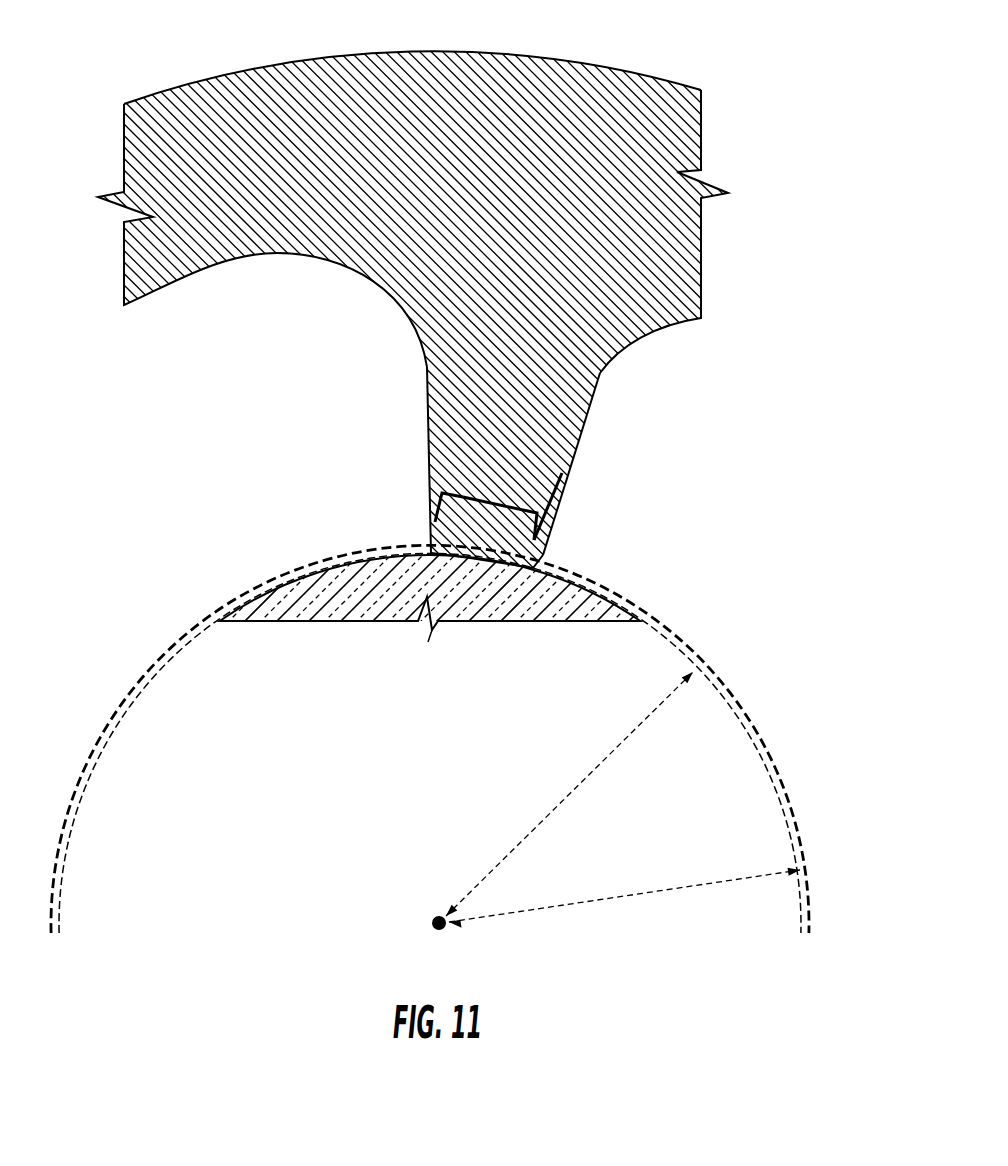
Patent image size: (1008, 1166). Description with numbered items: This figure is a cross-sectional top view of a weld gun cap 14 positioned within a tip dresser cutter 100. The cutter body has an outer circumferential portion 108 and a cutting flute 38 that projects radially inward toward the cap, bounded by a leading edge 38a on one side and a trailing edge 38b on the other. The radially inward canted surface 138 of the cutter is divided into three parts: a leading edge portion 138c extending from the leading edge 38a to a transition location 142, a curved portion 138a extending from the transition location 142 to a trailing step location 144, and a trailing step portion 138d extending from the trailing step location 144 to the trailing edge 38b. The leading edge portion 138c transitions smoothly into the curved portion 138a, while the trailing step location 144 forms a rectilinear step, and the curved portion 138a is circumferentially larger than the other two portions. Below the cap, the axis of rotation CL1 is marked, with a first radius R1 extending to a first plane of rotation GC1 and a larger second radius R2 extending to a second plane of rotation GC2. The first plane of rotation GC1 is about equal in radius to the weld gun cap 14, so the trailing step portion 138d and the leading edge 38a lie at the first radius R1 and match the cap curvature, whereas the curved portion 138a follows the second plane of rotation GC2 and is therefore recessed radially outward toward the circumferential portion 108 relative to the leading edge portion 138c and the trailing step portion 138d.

The tip dresser cutter 100 is at (262, 83).
The circumferential portion 108 is at (457, 53).
The cutting flute 38 is at (487, 480).
The leading edge 38a is at (427, 387).
The trailing edge 38b is at (603, 380).
The radially inward canted surface 138 is at (529, 555).
The curved portion 138a is at (501, 498).
The leading edge portion 138c is at (449, 492).
The trailing step portion 138d is at (561, 474).
The transition location 142 is at (430, 522).
The trailing step location 144 is at (538, 563).
The weld gun cap 14 is at (358, 613).
The first plane of rotation GC1 is at (787, 830).
The second plane of rotation GC2 is at (777, 772).
The first radius R1 is at (570, 794).
The second radius R2 is at (653, 893).
The axis of rotation CL1 is at (432, 921).